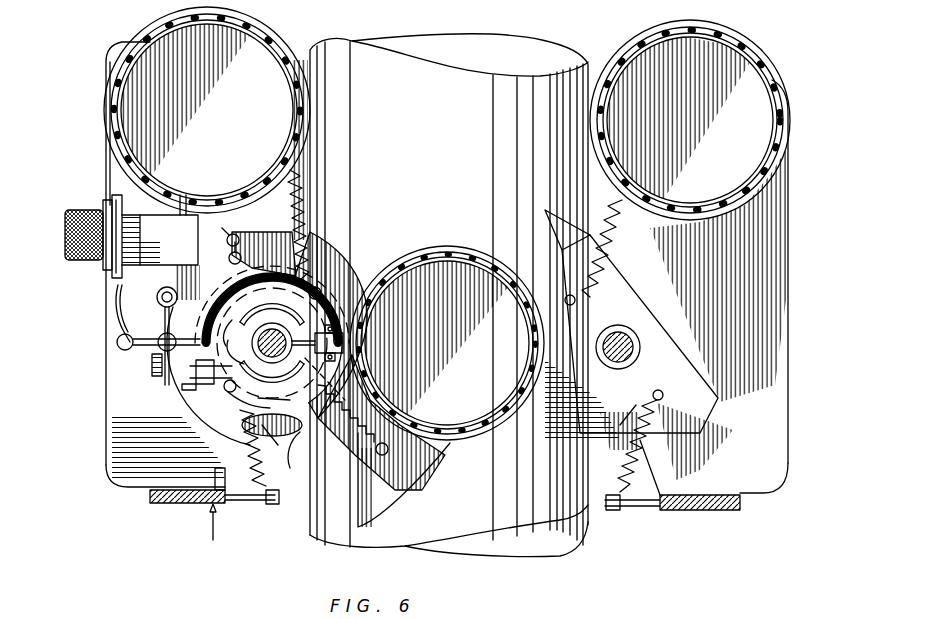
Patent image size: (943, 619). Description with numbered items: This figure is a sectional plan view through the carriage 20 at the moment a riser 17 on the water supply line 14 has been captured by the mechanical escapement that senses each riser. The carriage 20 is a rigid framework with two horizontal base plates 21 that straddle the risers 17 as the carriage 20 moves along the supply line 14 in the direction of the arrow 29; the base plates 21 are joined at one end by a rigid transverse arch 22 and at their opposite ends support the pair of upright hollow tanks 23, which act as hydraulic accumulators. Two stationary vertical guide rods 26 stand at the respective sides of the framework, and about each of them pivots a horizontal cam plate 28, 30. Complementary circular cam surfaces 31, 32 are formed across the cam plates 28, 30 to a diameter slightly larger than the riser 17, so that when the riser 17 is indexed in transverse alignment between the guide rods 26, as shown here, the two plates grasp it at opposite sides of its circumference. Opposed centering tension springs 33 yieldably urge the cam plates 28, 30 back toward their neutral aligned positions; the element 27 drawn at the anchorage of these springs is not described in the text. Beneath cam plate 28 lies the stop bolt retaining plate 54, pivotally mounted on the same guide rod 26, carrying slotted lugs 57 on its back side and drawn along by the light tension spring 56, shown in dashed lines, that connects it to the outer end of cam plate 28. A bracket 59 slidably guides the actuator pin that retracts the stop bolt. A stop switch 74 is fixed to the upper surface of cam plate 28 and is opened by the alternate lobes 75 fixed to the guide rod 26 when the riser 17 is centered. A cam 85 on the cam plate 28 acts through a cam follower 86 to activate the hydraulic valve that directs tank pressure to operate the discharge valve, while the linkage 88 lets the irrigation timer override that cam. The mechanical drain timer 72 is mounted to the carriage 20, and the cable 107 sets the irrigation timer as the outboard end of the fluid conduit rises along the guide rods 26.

The water supply line 14 is at (449, 283).
The riser 17 is at (435, 238).
The carriage 20 is at (444, 267).
The base plate 21 is at (110, 431).
The transverse arch 22 is at (200, 504).
The tank 23 is at (112, 120).
The guide rod 26 is at (268, 328).
The spring post 27 is at (298, 446).
The cam plate 28 is at (358, 468).
The arrow 29 is at (216, 530).
The cam plate 30 is at (700, 378).
The circular cam surface 31 is at (418, 432).
The circular cam surface 32 is at (358, 495).
The centering tension spring 33 is at (308, 220).
The stop bolt retaining plate 54 is at (158, 355).
The spring 56 is at (364, 428).
The slotted lug 57 is at (227, 236).
The bracket 59 is at (252, 354).
The drain timer 72 is at (132, 247).
The stop switch 74 is at (332, 372).
The lobe 75 is at (258, 336).
The cam 85 is at (258, 398).
The cam follower 86 is at (200, 388).
The linkage 88 is at (172, 284).
The cable 107 is at (118, 308).